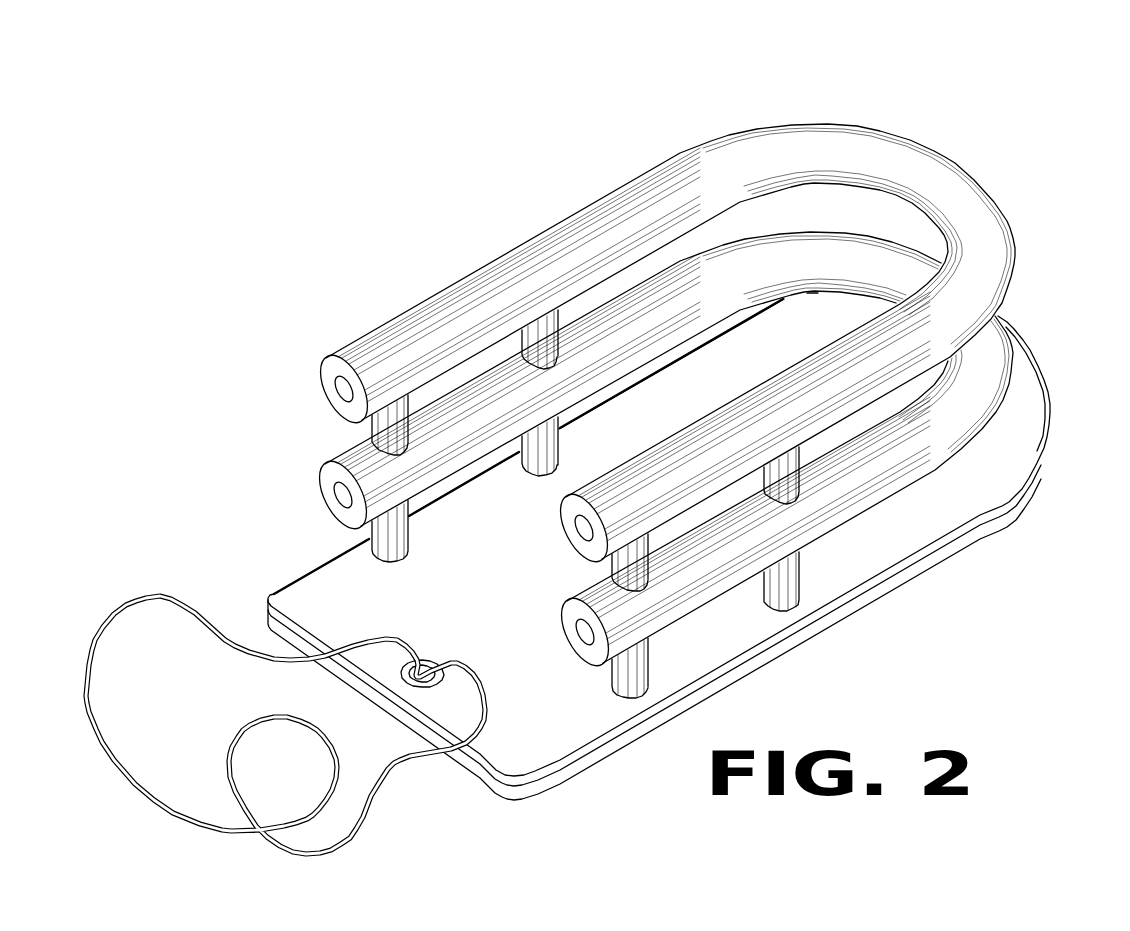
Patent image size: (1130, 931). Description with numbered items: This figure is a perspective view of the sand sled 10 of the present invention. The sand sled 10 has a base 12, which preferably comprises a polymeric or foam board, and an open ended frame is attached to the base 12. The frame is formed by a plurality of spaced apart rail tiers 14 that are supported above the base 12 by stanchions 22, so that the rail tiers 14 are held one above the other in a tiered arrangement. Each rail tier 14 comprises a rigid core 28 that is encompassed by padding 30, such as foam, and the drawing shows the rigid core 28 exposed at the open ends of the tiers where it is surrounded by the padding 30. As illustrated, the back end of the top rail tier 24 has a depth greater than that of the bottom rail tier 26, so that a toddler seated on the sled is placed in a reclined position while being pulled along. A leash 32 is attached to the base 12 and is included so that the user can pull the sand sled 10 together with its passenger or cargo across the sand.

The sand sled 10 is at (1022, 152).
The base 12 is at (817, 620).
The rail tiers 14 is at (611, 428).
The stanchions 22 is at (563, 327).
The top rail tier 24 is at (632, 213).
The bottom rail tier 26 is at (697, 573).
The rigid core 28 is at (343, 392).
The padding 30 is at (327, 383).
The leash 32 is at (195, 600).